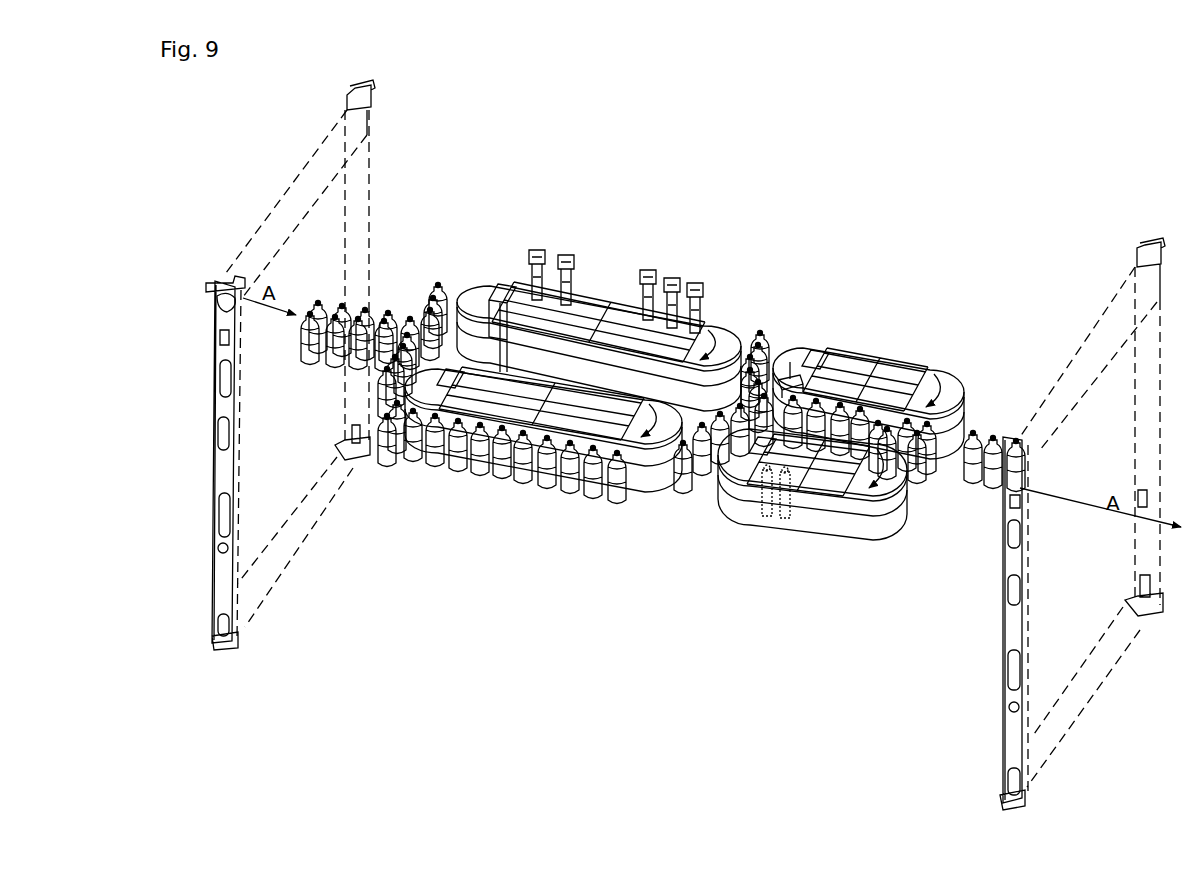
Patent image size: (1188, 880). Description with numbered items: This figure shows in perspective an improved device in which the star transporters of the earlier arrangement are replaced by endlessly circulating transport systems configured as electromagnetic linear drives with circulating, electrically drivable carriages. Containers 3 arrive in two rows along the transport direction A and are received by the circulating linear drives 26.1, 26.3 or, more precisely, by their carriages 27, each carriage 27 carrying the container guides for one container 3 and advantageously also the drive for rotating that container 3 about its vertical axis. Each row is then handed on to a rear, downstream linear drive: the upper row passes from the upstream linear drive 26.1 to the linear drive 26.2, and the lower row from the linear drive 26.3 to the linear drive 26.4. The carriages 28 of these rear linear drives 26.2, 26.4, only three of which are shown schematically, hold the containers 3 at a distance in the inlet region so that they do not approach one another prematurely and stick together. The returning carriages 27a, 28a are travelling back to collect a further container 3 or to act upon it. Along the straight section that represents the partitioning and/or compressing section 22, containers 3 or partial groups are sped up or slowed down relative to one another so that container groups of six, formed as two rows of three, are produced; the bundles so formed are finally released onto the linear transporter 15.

The containers 3 is at (480, 462).
The linear transporter 15 is at (946, 504).
The partitioning and/or compressing section 22 is at (861, 387).
The linear drive 26.1 is at (734, 309).
The linear drive 26.2 is at (953, 349).
The linear drive 26.3 is at (669, 515).
The linear drive 26.4 is at (878, 569).
The carriage 27 is at (533, 251).
The returning carriage 27a is at (486, 300).
The carriage 28 is at (795, 364).
The returning carriage 28a is at (778, 520).